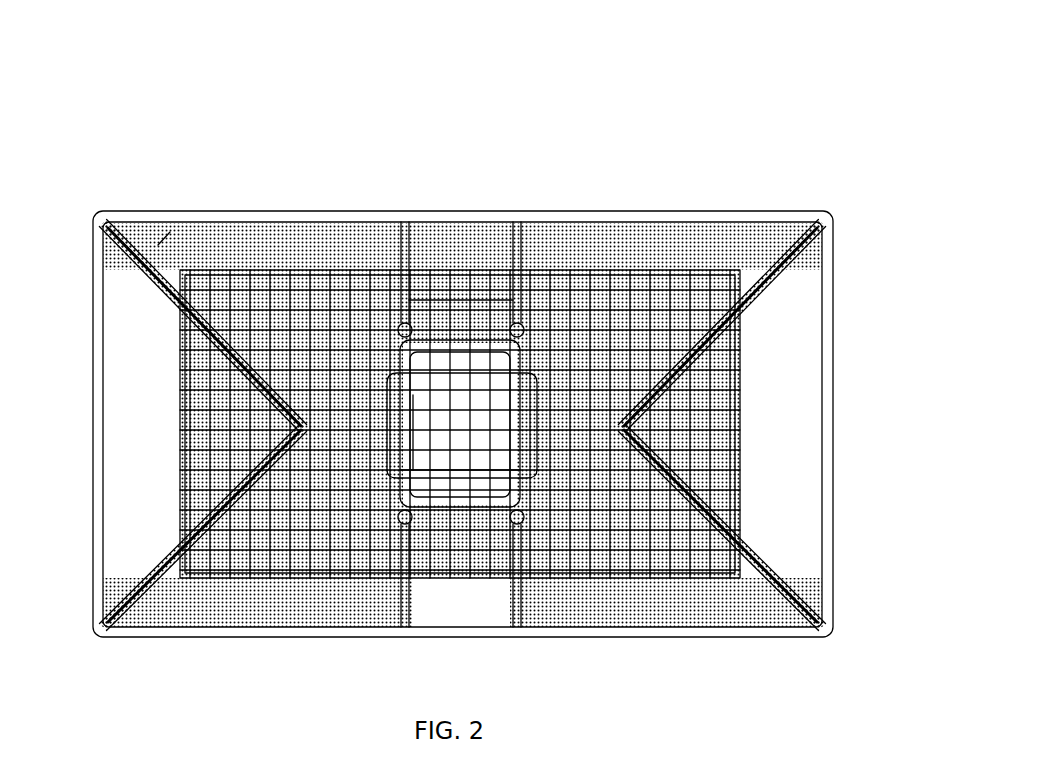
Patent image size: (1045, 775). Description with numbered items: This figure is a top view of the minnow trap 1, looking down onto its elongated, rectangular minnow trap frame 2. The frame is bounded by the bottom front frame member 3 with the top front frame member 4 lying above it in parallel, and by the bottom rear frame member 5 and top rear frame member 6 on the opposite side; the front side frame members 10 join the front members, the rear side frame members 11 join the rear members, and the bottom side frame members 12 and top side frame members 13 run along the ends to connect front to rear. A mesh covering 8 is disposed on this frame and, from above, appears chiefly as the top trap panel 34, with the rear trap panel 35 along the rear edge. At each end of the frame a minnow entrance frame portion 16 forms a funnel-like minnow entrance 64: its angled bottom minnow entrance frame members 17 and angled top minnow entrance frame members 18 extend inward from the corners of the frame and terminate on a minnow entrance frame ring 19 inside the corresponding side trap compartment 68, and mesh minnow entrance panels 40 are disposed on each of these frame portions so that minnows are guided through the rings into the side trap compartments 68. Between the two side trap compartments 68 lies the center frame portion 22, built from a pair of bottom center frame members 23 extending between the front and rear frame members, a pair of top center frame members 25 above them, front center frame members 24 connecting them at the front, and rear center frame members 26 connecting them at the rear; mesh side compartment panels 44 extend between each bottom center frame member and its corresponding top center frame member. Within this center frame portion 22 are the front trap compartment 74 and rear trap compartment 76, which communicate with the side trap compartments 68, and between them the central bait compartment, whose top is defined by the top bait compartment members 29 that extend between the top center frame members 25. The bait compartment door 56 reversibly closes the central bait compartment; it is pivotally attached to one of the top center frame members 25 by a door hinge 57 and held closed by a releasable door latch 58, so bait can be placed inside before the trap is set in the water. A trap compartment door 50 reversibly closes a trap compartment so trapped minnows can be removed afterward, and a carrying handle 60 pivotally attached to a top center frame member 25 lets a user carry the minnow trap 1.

The minnow trap 1 is at (243, 117).
The minnow trap frame 2 is at (160, 647).
The bottom front frame member 3 is at (270, 626).
The top front frame member 4 is at (642, 628).
The bottom rear frame member 5 is at (300, 260).
The top rear frame member 6 is at (489, 183).
The mesh covering 8 is at (289, 639).
The front side frame members 10 is at (140, 626).
The rear side frame members 11 is at (113, 232).
The bottom side frame members 12 is at (180, 350).
The top side frame members 13 is at (95, 350).
The minnow entrance frame portions 16 is at (152, 572).
The bottom minnow entrance frame members 17 is at (212, 300).
The top minnow entrance frame members 18 is at (143, 264).
The minnow entrance frame ring 19 is at (284, 428).
The center frame portion 22 is at (543, 554).
The bottom center frame members 23 is at (410, 300).
The front center frame members 24 is at (425, 584).
The top center frame members 25 is at (402, 225).
The rear center frame members 26 is at (408, 300).
The top bait compartment members 29 is at (472, 345).
The top trap panel 34 is at (128, 312).
The rear trap panel 35 is at (158, 245).
The mesh minnow entrance panels 40 is at (240, 270).
The mesh side compartment panels 44 is at (550, 627).
The trap compartment door 50 is at (477, 610).
The bait compartment door 56 is at (476, 421).
The door hinge 57 is at (413, 400).
The releasable door latch 58 is at (513, 423).
The carrying handle 60 is at (360, 632).
The minnow entrance 64 is at (122, 485).
The side trap compartments 68 is at (335, 302).
The front trap compartment 74 is at (459, 591).
The rear trap compartment 76 is at (470, 248).